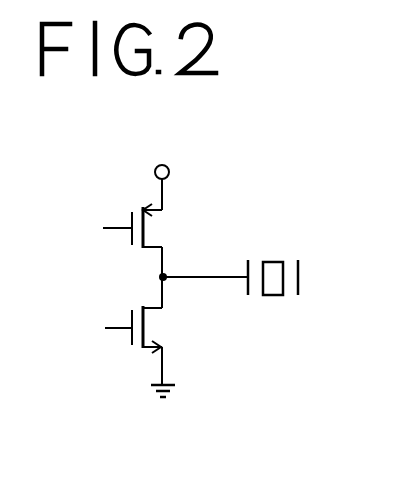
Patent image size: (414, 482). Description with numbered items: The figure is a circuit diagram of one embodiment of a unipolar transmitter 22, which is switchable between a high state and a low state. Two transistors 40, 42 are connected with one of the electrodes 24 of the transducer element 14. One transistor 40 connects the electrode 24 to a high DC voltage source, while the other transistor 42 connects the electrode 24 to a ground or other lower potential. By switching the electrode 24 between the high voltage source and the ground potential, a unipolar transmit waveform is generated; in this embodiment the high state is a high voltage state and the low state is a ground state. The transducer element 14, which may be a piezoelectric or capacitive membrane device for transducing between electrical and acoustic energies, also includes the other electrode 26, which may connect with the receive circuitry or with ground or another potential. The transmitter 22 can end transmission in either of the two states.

The transmitter 22 is at (231, 168).
The transistor 40 is at (140, 205).
The transistor 42 is at (134, 305).
The transducer element 14 is at (273, 259).
The electrode 24 is at (245, 292).
The electrode 26 is at (299, 278).